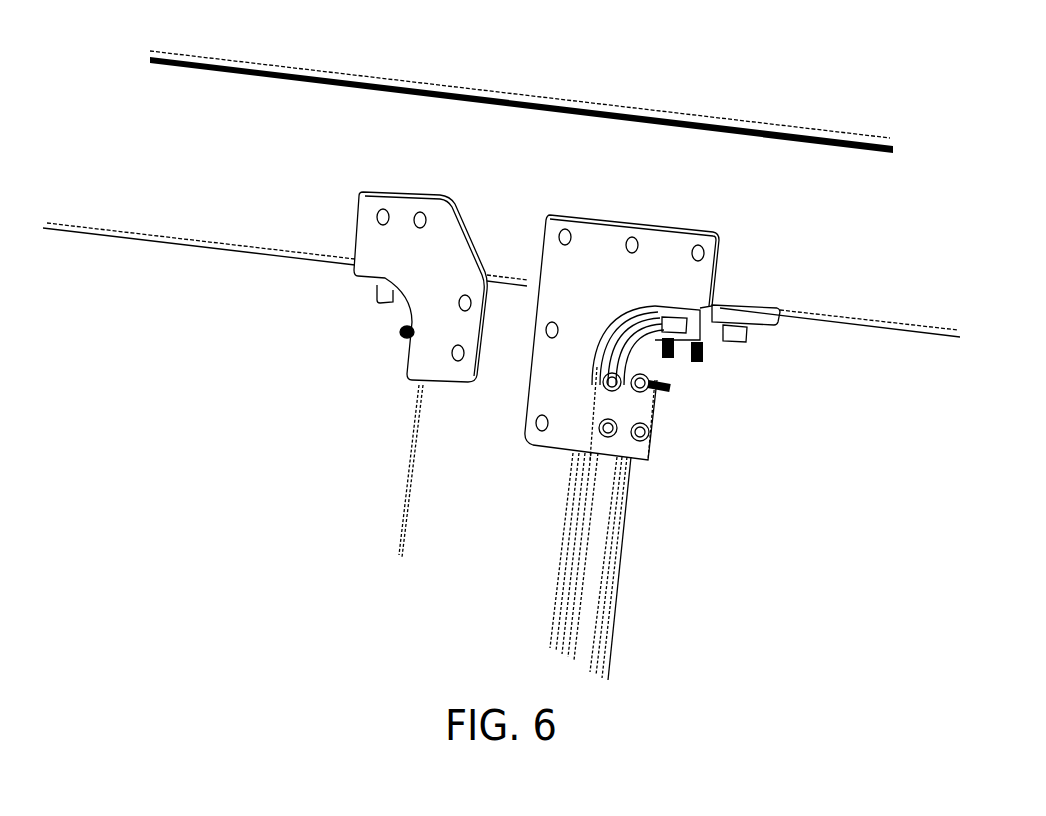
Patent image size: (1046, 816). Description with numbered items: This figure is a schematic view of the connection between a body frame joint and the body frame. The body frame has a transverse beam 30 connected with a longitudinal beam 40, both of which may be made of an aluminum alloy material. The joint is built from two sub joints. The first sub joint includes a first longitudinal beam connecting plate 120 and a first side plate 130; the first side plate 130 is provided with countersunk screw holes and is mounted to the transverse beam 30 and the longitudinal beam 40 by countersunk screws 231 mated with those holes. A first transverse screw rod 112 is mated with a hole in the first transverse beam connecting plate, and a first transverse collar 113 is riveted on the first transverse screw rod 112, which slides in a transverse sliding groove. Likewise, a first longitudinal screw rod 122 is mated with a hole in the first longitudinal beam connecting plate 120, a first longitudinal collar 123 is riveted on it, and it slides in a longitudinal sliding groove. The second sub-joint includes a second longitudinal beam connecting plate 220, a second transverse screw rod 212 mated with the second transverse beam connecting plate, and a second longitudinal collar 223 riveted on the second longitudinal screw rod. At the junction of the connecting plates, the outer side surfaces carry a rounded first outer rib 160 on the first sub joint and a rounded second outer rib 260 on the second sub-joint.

The transverse beam 30 is at (525, 145).
The longitudinal beam 40 is at (537, 552).
The first transverse screw rod 112 is at (678, 360).
The first transverse collar 113 is at (722, 340).
The first longitudinal beam connecting plate 120 is at (600, 407).
The first longitudinal screw rod 122 is at (607, 333).
The first longitudinal collar 123 is at (627, 487).
The first side plate 130 is at (688, 318).
The first outer rib 160 is at (613, 333).
The second transverse screw rod 212 is at (682, 316).
The second longitudinal beam connecting plate 220 is at (653, 407).
The second longitudinal collar 223 is at (648, 443).
The countersunk screws 231 is at (570, 233).
The second outer rib 260 is at (662, 365).